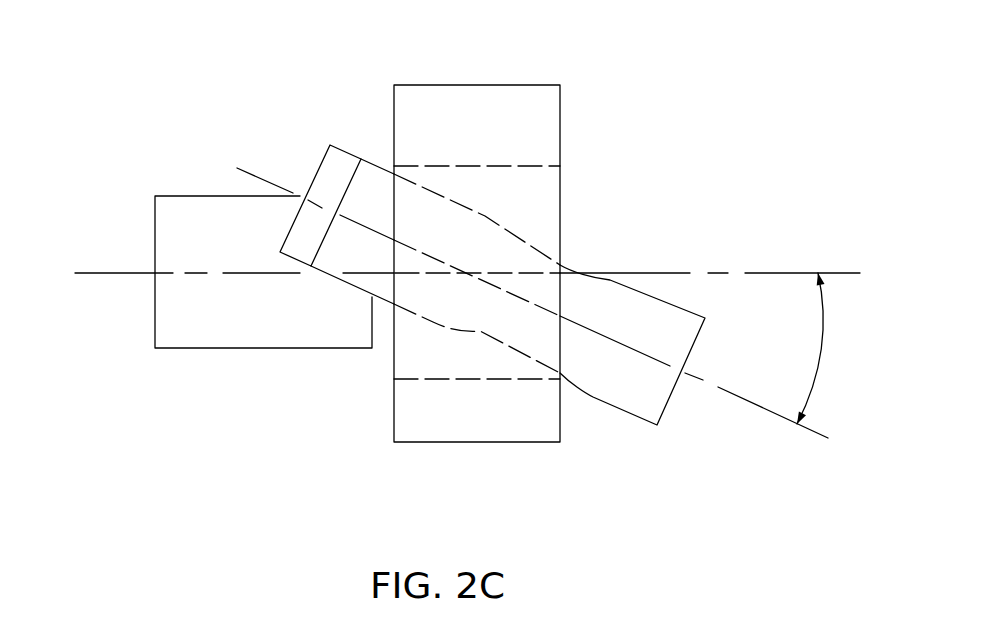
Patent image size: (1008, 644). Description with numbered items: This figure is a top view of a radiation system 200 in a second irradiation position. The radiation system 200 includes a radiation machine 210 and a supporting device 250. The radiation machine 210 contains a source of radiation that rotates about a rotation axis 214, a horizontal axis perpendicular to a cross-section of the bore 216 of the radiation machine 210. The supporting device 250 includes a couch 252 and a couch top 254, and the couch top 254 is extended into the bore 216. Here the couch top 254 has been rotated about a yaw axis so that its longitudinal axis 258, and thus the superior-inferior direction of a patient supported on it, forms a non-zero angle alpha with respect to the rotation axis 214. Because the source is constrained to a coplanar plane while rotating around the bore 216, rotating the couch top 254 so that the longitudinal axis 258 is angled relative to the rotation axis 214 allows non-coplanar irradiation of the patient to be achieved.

The radiation system 200 is at (148, 76).
The radiation machine 210 is at (588, 76).
The rotation axis 214 is at (722, 272).
The bore 216 is at (501, 164).
The supporting device 250 is at (175, 389).
The couch 252 is at (263, 348).
The couch top 254 is at (375, 165).
The longitudinal axis 258 is at (755, 407).